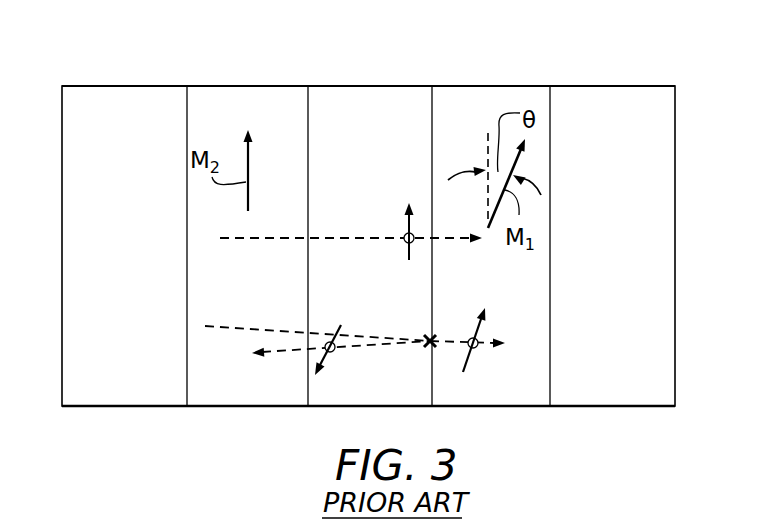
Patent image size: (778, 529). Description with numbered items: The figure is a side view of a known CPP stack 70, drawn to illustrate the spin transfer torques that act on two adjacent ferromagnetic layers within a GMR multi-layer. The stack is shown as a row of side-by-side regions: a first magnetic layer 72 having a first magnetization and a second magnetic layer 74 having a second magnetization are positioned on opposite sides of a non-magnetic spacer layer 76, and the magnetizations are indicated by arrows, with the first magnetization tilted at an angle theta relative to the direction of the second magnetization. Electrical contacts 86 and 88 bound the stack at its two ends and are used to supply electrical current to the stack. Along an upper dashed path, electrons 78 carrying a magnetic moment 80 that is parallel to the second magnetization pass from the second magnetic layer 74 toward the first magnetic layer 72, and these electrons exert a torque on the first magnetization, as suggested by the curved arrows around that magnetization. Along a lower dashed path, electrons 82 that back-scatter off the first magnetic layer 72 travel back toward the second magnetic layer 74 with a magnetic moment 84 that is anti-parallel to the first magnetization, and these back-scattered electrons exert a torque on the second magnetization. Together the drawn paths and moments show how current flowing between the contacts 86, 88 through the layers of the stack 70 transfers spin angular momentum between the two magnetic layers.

The CPP stack 70 is at (612, 66).
The first magnetic layer 72 is at (491, 95).
The second magnetic layer 74 is at (246, 90).
The non-magnetic spacer layer 76 is at (366, 95).
The electrons 78 is at (405, 243).
The magnetic moment 80 is at (405, 216).
The electrons 82 is at (333, 352).
The magnetic moment 84 is at (325, 355).
The electrical contact 86 is at (657, 362).
The electrical contact 88 is at (75, 373).